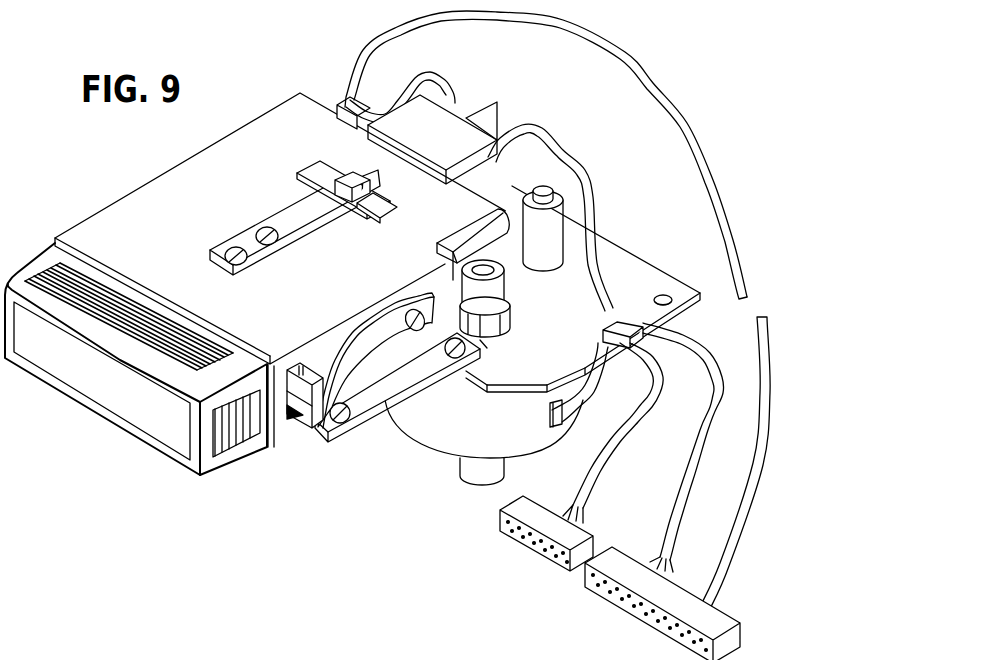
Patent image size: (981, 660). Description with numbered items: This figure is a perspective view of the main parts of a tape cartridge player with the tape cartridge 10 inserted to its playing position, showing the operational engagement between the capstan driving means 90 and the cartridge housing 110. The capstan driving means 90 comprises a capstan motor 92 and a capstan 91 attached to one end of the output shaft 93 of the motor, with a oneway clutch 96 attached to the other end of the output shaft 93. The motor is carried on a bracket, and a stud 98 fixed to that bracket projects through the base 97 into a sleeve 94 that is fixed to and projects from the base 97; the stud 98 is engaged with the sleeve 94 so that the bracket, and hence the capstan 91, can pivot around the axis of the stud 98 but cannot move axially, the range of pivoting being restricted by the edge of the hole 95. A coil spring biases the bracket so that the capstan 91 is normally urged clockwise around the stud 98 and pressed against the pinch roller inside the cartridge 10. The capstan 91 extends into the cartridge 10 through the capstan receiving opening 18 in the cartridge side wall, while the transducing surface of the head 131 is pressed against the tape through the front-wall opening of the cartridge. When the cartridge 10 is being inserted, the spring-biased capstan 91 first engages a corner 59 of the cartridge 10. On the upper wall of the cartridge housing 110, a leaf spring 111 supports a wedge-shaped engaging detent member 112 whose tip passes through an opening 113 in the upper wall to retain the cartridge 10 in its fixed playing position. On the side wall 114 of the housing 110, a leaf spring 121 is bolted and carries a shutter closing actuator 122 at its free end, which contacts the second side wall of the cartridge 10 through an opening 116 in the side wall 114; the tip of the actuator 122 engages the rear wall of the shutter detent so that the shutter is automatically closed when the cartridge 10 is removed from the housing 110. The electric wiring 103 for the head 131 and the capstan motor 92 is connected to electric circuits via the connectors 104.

The tape cartridge 10 is at (90, 380).
The cartridge housing 110 is at (184, 218).
The leaf spring 111 is at (290, 222).
The engaging detent member 112 is at (348, 176).
The opening 113 is at (383, 200).
The head 131 is at (450, 122).
The corner 59 is at (492, 230).
The capstan receiving opening 18 is at (428, 278).
The stud 98 is at (550, 188).
The sleeve 94 is at (551, 237).
The capstan driving means 90 is at (675, 243).
The base 97 is at (645, 288).
The capstan 91 is at (504, 292).
The hole 95 is at (503, 318).
The output shaft 93 is at (488, 331).
The side wall 114 is at (347, 336).
The opening 116 is at (303, 365).
The leaf spring 121 is at (378, 340).
The shutter closing actuator 122 is at (300, 432).
The capstan motor 92 is at (430, 420).
The oneway clutch 96 is at (472, 468).
The electric wiring 103 is at (683, 485).
The connectors 104 is at (617, 605).